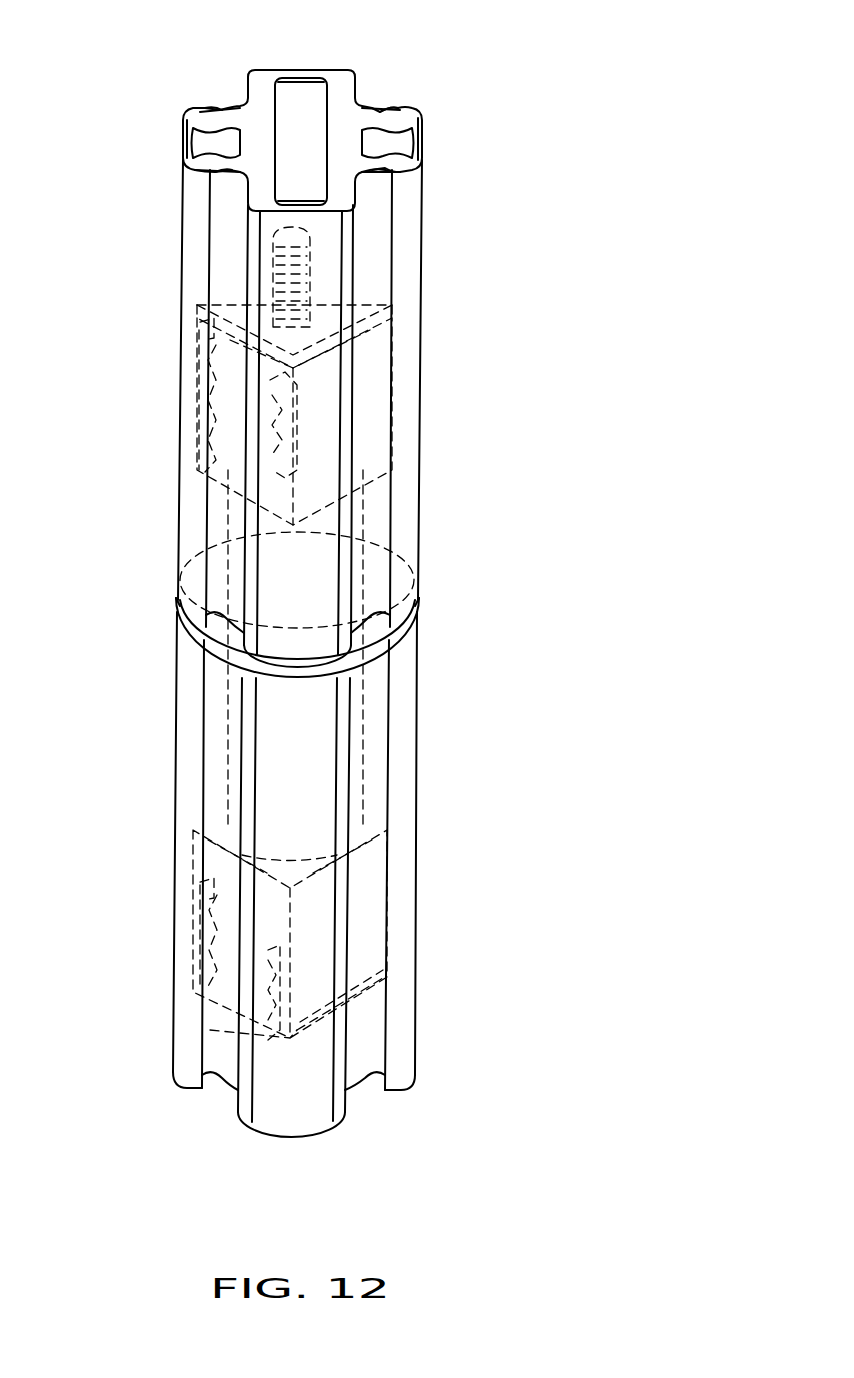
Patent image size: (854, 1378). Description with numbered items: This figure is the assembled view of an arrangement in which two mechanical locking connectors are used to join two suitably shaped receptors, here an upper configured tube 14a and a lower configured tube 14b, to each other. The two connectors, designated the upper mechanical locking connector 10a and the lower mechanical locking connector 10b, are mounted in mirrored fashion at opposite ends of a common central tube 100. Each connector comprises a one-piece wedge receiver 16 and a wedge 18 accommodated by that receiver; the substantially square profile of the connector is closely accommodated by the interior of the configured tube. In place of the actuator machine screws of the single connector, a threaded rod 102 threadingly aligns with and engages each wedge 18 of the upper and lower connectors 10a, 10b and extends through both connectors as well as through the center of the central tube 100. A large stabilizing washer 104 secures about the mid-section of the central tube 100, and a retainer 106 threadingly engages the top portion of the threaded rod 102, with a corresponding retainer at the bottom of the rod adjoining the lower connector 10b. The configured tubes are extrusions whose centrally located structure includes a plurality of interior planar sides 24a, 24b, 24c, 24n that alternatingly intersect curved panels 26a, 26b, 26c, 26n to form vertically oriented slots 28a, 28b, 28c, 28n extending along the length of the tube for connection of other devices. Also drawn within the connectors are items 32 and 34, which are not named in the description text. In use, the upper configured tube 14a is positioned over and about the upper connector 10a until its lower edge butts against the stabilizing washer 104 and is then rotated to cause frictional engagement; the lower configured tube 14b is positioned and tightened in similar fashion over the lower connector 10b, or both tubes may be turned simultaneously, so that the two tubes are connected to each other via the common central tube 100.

The upper mechanical locking connector 10a is at (185, 435).
The lower mechanical locking connector 10b is at (185, 834).
The upper configured tube 14a is at (176, 521).
The lower configured tube 14b is at (174, 721).
The wedge receiver 16 is at (190, 400).
The wedge 18 is at (400, 308).
The interior planar side 24a is at (248, 128).
The interior planar side 24b is at (347, 127).
The interior planar side 24c is at (355, 165).
The interior planar side 24n is at (232, 175).
The curved panel 26a is at (300, 68).
The curved panel 26b is at (422, 137).
The curved panel 26c is at (303, 218).
The curved panel 26n is at (181, 185).
The vertically oriented slot 28a is at (235, 97).
The vertically oriented slot 28b is at (383, 112).
The vertically oriented slot 28c is at (370, 217).
The vertically oriented slot 28n is at (222, 240).
The insert sleeve 32 is at (392, 437).
The spring clip 34 is at (178, 375).
The central tube 100 is at (415, 538).
The threaded rod 102 is at (222, 238).
The stabilizing washer 104 is at (400, 640).
The retainer 106 is at (395, 350).